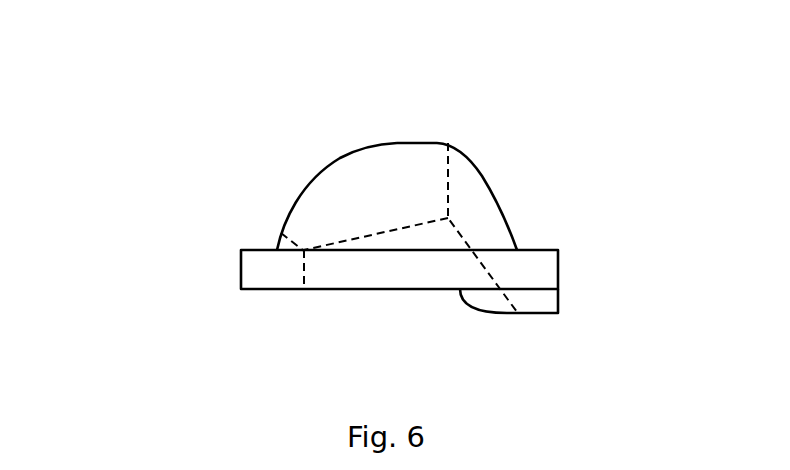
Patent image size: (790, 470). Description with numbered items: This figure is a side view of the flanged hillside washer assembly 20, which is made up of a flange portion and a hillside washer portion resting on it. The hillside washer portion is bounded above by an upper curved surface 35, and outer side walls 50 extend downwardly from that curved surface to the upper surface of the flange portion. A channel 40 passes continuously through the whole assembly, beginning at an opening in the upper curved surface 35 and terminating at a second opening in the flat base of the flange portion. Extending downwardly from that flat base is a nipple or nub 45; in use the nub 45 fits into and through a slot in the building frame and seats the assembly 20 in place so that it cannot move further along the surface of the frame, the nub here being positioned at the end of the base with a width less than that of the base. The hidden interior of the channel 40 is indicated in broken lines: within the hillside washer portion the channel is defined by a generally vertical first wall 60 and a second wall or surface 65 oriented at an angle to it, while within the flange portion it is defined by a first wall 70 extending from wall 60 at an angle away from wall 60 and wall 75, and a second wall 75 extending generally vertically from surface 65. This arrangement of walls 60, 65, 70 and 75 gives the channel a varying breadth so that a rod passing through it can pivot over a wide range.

The flanged hillside washer assembly 20 is at (276, 106).
The upper curved surface 35 is at (298, 198).
The channel 40 is at (373, 180).
The nub 45 is at (537, 303).
The outer side walls 50 is at (383, 163).
The first wall 60 is at (450, 180).
The second wall or surface 65 is at (287, 233).
The first wall of second channel portion 70 is at (485, 267).
The second wall of second channel portion 75 is at (302, 267).